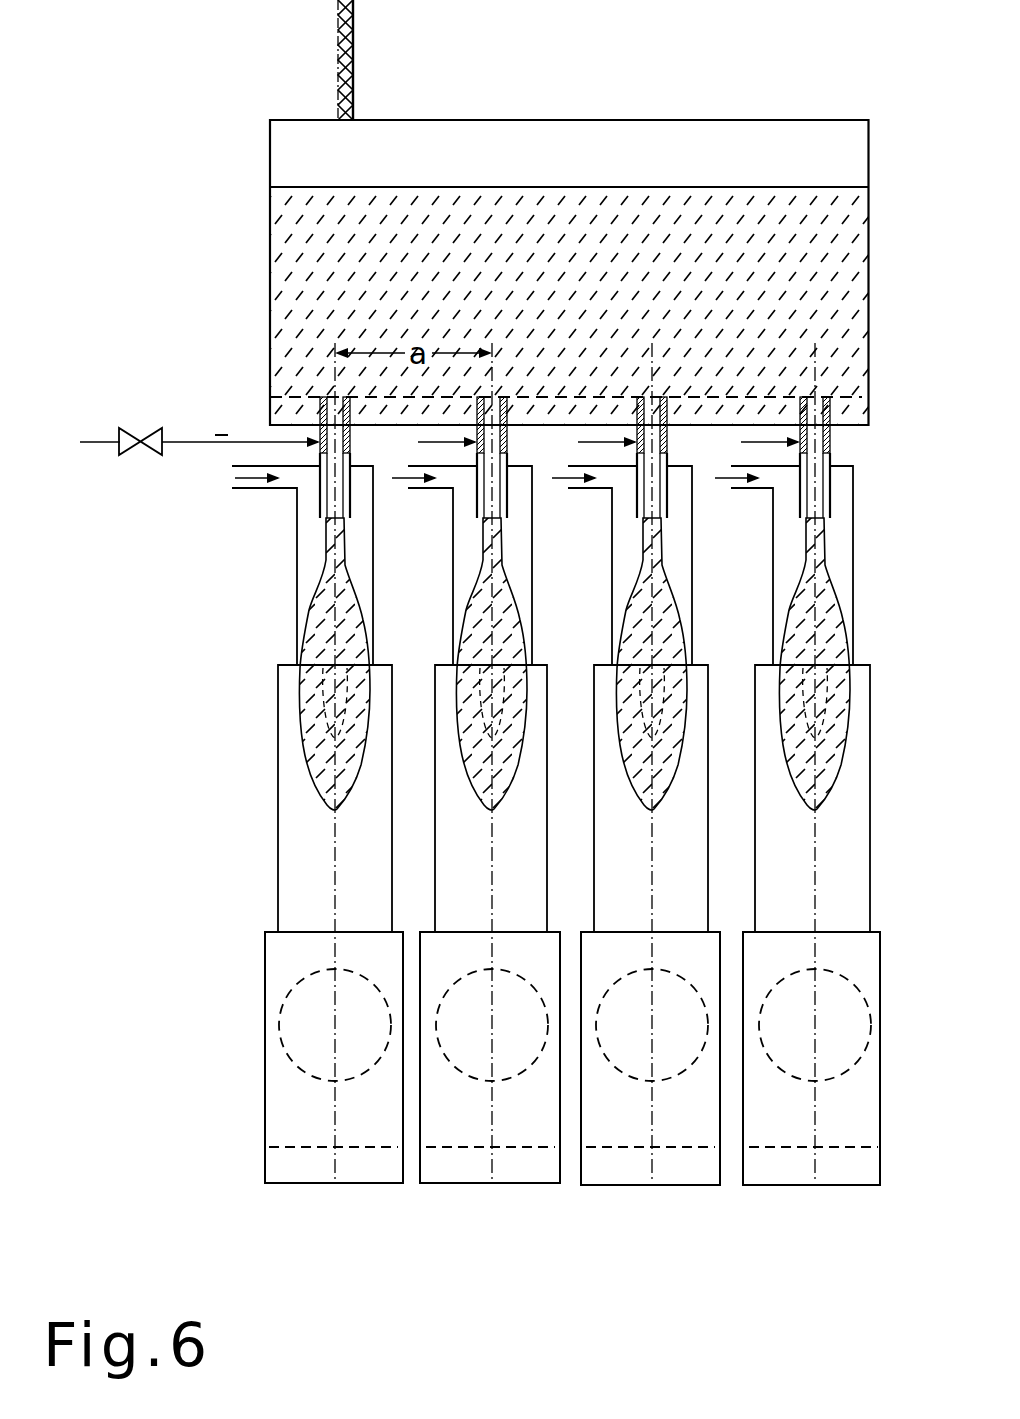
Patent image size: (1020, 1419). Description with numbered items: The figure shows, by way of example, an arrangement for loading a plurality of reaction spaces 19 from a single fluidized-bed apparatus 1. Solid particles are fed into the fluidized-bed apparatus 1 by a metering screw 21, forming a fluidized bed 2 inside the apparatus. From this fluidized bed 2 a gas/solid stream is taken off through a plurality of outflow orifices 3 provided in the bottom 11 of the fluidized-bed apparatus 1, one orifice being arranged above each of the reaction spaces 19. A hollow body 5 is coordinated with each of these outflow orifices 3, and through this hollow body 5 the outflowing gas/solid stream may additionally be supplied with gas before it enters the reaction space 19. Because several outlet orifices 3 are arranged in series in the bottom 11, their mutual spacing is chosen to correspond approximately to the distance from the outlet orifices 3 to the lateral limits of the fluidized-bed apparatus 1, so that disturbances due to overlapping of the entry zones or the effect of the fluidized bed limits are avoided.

The fluidized-bed apparatus 1 is at (216, 150).
The fluidized bed 2 is at (306, 275).
The outflow orifice 3 is at (505, 378).
The hollow body 5 is at (322, 408).
The bottom 11 is at (773, 390).
The reaction space 19 is at (598, 1163).
The metering screw 21 is at (360, 60).